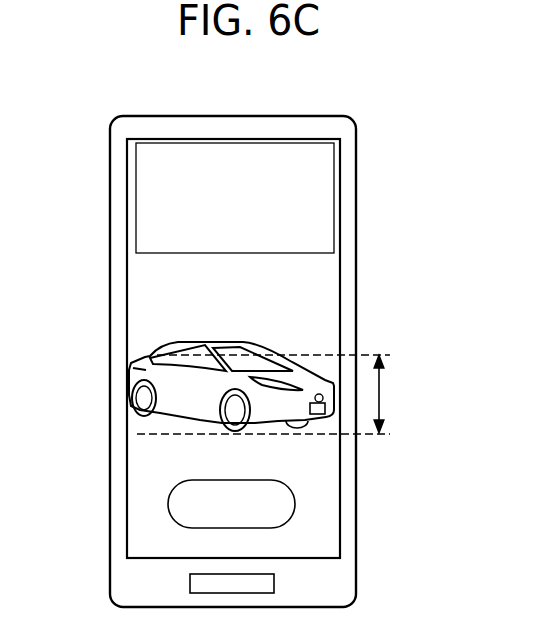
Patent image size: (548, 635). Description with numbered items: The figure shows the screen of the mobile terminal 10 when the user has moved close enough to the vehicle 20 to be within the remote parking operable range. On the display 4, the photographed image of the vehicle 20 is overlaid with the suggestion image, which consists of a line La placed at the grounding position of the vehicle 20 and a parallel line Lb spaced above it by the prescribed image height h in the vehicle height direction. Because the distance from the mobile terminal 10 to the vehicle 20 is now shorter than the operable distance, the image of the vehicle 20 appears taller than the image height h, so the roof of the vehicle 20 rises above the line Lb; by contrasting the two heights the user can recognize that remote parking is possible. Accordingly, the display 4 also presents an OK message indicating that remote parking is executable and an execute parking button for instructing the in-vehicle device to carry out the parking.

The mobile terminal 10 is at (352, 115).
The display 4 is at (341, 288).
The vehicle 20 is at (147, 370).
The line Lb is at (142, 357).
The line La is at (144, 436).
The image height h is at (383, 402).